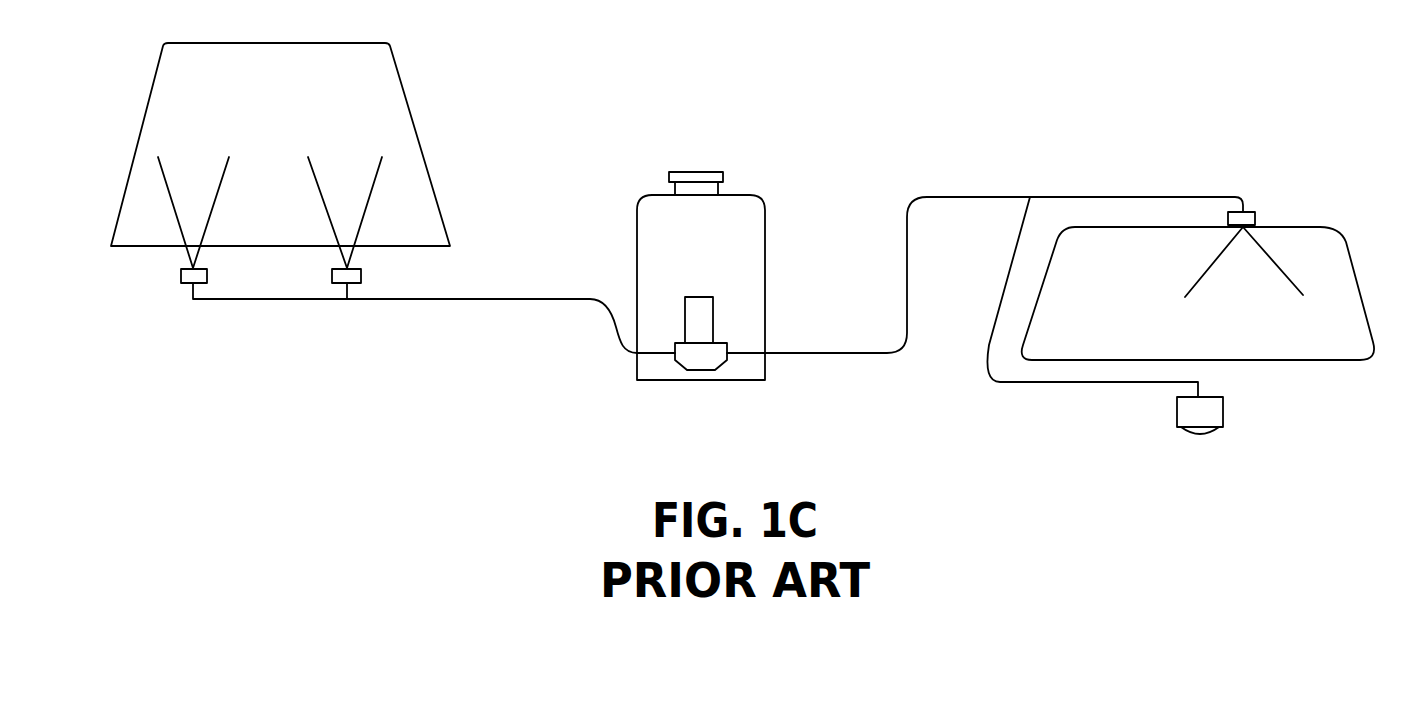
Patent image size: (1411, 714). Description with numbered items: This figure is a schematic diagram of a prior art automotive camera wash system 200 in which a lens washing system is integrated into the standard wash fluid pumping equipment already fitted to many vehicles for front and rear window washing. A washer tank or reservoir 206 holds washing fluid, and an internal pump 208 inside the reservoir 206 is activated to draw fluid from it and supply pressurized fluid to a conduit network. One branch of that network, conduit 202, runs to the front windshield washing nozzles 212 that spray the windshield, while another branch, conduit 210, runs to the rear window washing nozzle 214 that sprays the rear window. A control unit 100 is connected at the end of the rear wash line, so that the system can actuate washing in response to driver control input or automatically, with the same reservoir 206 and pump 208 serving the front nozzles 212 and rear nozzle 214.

The control unit 100 is at (1215, 407).
The washer system 200 is at (901, 126).
The fluid line to front nozzles 202 is at (501, 257).
The fluid reservoir 206 is at (732, 218).
The pump 208 is at (700, 323).
The sensor and washer assembly 210 is at (853, 366).
The front washer nozzles 212 is at (180, 277).
The rear washer nozzle 214 is at (1248, 211).